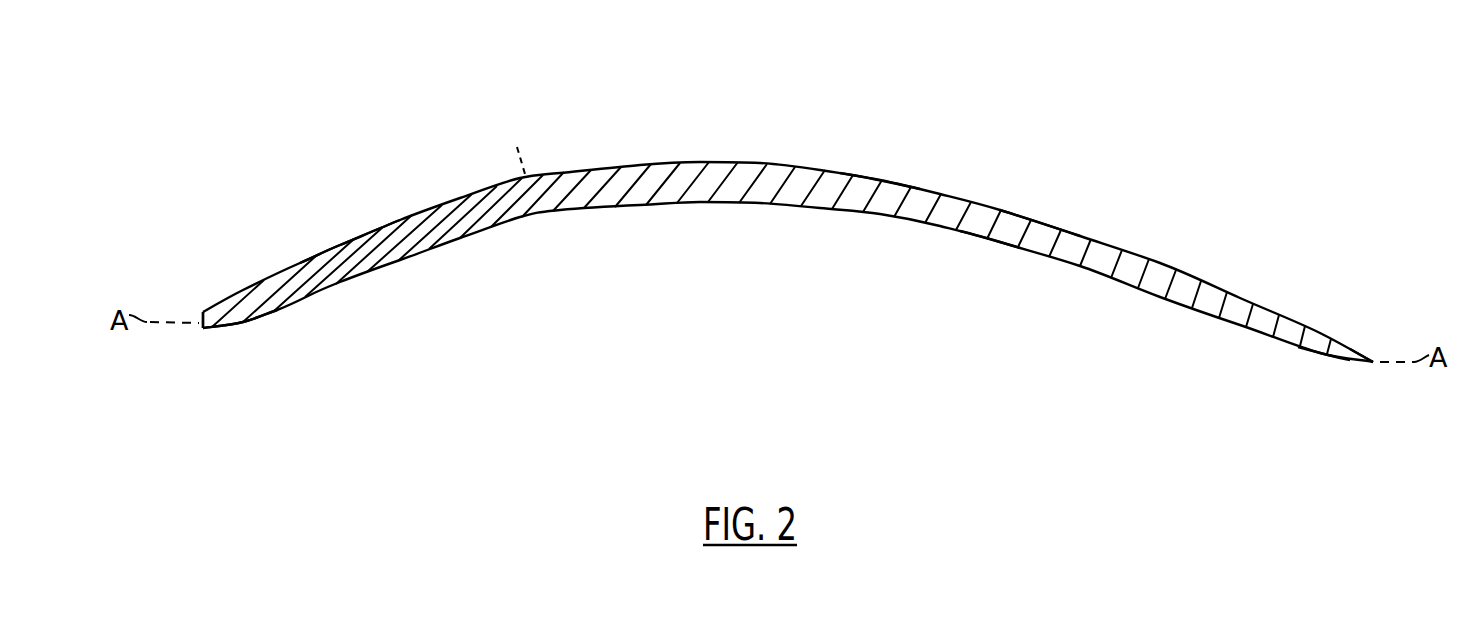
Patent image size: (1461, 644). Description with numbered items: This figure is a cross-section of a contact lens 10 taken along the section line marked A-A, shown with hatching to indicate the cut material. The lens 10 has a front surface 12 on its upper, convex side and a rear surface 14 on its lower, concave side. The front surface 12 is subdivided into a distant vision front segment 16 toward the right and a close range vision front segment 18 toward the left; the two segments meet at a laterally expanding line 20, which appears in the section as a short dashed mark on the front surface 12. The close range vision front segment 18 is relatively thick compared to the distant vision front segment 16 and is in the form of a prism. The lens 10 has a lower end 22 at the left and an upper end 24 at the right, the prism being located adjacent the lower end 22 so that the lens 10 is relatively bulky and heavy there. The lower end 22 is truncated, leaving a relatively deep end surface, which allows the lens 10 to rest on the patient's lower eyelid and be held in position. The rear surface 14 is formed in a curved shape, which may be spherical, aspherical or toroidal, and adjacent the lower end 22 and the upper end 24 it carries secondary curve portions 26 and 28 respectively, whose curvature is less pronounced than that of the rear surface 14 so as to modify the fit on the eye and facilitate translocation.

The contact lens 10 is at (410, 80).
The front surface 12 is at (1037, 220).
The rear surface 14 is at (995, 241).
The distant vision front segment 16 is at (880, 180).
The close range vision front segment 18 is at (337, 247).
The laterally expanding line 20 is at (522, 178).
The lower end 22 is at (203, 313).
The upper end 24 is at (1373, 363).
The secondary curve portion 26 is at (240, 323).
The secondary curve portion 28 is at (1317, 352).